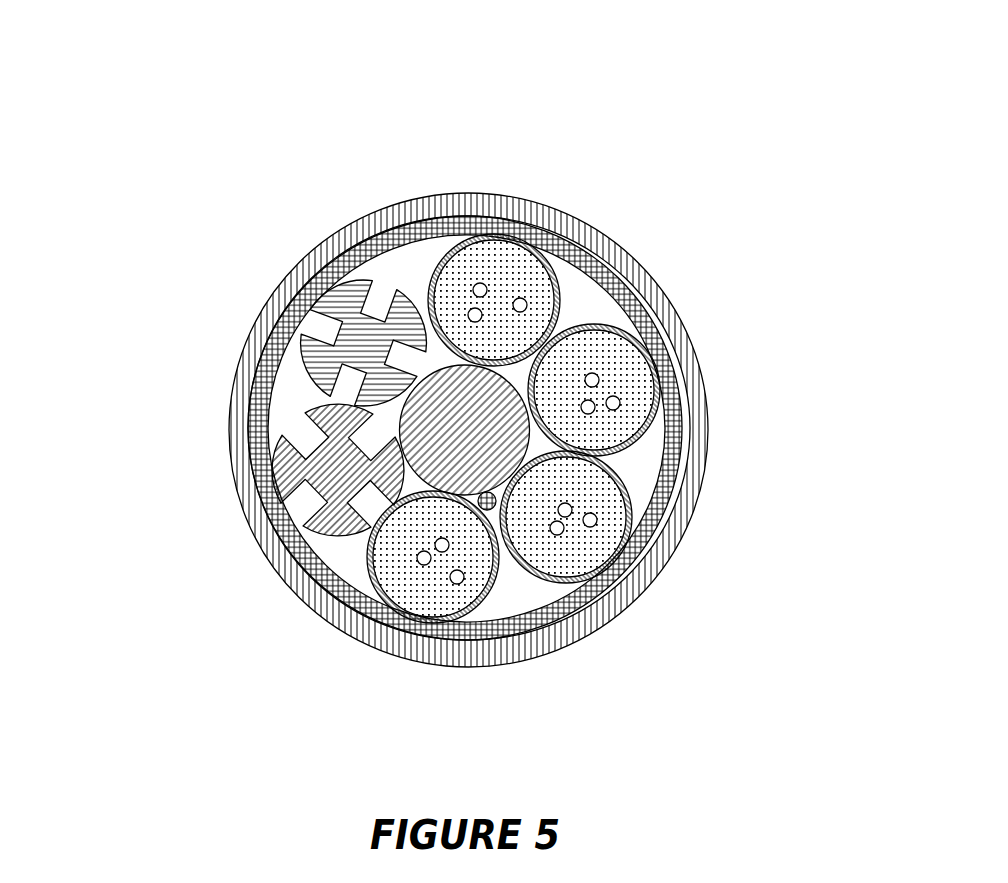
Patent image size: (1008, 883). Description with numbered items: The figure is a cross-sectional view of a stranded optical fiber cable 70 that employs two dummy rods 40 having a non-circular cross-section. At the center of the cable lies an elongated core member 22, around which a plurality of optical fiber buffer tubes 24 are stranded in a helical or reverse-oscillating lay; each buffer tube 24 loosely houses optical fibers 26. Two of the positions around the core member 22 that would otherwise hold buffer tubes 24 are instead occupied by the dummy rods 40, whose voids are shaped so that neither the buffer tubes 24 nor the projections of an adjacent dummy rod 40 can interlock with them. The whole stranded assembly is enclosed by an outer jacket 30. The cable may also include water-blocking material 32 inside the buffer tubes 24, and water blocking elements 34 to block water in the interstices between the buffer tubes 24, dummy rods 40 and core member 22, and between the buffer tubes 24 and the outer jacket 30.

The stranded optical fiber cable 70 is at (318, 207).
The elongated core member 22 is at (463, 243).
The optical fiber buffer tubes 24 is at (560, 284).
The optical fibers 26 is at (557, 533).
The outer jacket 30 is at (250, 528).
The water-blocking material 32 is at (553, 253).
The water blocking elements 34 is at (442, 498).
The dummy rods 40 is at (290, 433).